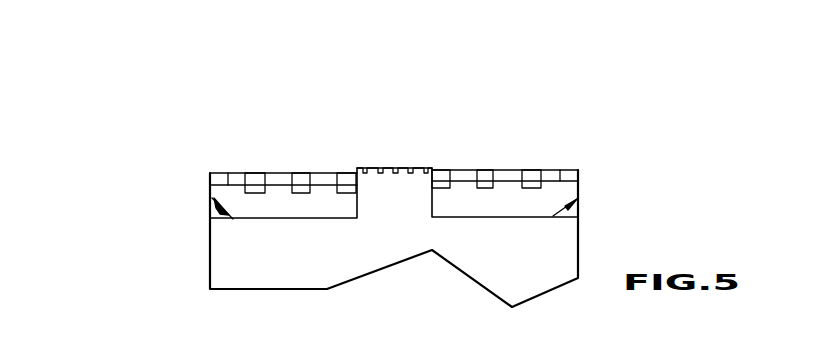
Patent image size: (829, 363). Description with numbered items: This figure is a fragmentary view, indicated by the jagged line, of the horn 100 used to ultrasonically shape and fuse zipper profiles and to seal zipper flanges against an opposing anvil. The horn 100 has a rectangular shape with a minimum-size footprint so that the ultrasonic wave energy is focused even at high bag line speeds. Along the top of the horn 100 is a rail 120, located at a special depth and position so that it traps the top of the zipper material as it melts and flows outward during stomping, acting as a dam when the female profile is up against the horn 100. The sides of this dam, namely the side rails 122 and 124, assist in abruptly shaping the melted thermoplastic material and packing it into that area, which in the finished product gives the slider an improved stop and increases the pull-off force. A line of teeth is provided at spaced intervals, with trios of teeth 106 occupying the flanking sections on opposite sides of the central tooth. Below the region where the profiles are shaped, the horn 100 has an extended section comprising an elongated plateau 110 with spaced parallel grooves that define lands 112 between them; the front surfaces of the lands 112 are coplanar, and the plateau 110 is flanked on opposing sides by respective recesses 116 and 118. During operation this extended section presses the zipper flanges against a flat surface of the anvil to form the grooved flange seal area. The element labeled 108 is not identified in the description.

The horn 100 is at (580, 237).
The teeth 106 is at (530, 177).
The contact pad 108 is at (253, 173).
The elongated plateau 110 is at (357, 204).
The lands 112 is at (363, 168).
The recess 116 is at (576, 200).
The recess 118 is at (214, 198).
The rail 120 is at (465, 169).
The side rail 122 is at (568, 168).
The side rail 124 is at (222, 173).